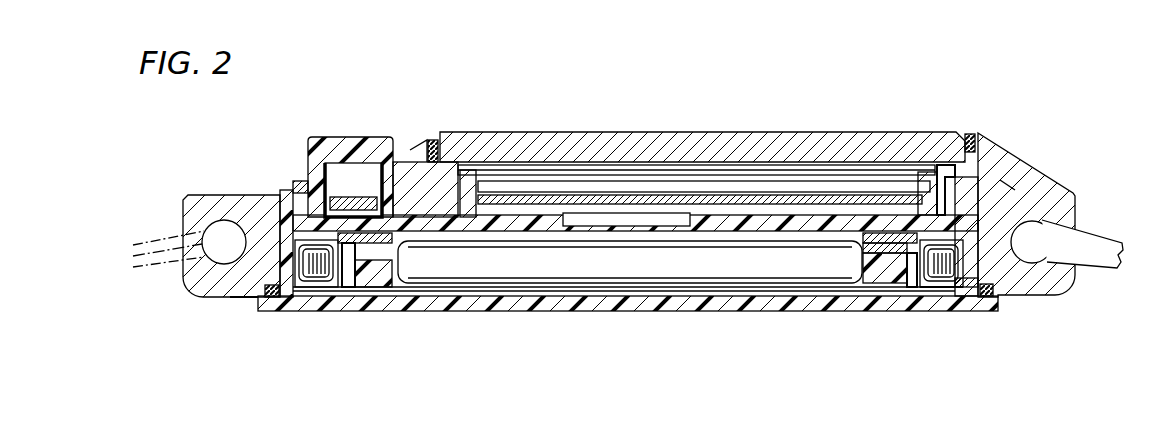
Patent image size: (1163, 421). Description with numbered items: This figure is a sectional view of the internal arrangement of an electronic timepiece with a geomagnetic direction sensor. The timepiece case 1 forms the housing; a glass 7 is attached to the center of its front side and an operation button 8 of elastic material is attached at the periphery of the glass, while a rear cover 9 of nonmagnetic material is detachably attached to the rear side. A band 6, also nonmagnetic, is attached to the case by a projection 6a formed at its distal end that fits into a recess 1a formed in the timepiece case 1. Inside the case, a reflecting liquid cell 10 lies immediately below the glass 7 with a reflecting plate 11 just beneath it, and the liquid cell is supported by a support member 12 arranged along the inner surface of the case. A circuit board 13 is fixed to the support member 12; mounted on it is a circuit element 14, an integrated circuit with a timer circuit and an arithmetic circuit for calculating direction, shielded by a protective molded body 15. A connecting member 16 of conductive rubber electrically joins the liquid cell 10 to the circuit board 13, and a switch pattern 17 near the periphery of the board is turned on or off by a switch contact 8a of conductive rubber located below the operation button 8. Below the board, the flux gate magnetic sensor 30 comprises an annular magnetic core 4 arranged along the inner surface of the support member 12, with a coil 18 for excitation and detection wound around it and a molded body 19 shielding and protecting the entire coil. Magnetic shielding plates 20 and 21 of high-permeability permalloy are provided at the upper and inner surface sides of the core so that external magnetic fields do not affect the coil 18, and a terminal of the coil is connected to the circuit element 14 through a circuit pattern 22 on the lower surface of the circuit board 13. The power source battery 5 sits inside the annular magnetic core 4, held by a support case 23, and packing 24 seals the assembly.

The timepiece case 1 is at (1003, 150).
The recess 1a is at (225, 220).
The annular magnetic core 4 is at (940, 272).
The power source battery 5 is at (586, 262).
The band 6 is at (1102, 246).
The projection 6a is at (1040, 262).
The glass 7 is at (732, 148).
The operation button 8 is at (362, 148).
The switch contact 8a is at (350, 194).
The rear cover 9 is at (465, 303).
The reflecting liquid cell 10 is at (524, 168).
The reflecting plate 11 is at (619, 185).
The support member 12 is at (948, 180).
The circuit board 13 is at (747, 228).
The circuit element 14 is at (638, 222).
The protective molded body 15 is at (676, 198).
The connecting member 16 is at (925, 180).
The switch pattern 17 is at (295, 192).
The coil 18 is at (957, 283).
The molded body 19 is at (942, 278).
The magnetic shielding plate 20 is at (344, 283).
The magnetic shielding plate 21 is at (237, 292).
The circuit pattern 22 is at (392, 285).
The support case 23 is at (370, 283).
The packing 24 is at (433, 138).
The flux gate magnetic sensor 30 is at (318, 280).